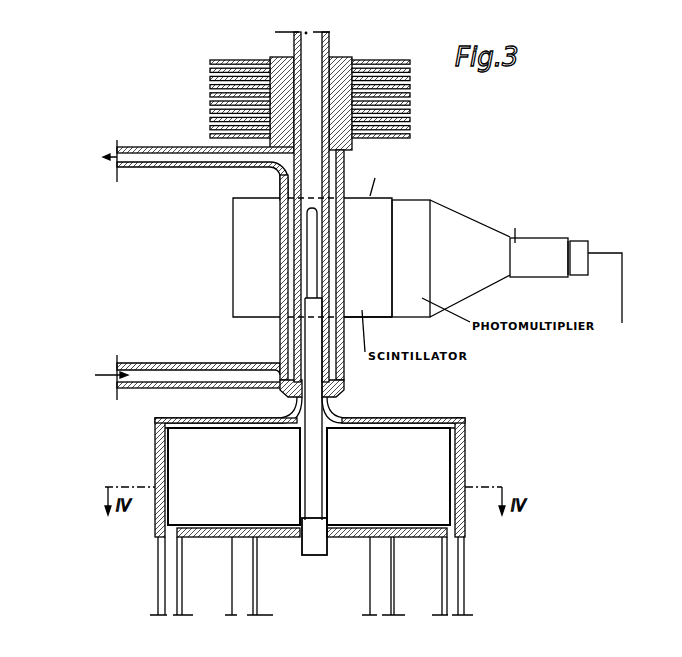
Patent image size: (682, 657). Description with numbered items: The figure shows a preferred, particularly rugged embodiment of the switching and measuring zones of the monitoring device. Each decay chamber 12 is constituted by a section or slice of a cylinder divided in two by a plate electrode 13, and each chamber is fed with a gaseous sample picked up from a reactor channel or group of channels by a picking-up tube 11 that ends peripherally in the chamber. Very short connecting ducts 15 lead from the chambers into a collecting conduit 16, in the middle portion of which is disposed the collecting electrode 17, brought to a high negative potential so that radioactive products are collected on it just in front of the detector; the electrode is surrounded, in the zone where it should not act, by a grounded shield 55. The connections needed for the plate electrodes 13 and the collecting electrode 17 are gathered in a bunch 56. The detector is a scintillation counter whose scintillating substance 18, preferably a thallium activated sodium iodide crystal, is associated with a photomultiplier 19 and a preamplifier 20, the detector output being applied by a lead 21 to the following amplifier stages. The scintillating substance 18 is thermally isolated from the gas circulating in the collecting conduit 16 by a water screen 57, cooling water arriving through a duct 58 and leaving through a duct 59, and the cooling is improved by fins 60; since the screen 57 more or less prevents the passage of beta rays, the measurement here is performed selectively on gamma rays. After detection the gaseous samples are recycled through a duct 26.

The picking-up tube 11 is at (453, 576).
The decay chamber 12 is at (309, 482).
The plate electrode 13 is at (452, 457).
The connecting duct 15 is at (335, 413).
The collecting conduit 16 is at (300, 258).
The collecting electrode 17 is at (312, 228).
The scintillating substance 18 is at (375, 312).
The photomultiplier 19 is at (410, 220).
The preamplifier 20 is at (555, 270).
The lead 21 is at (620, 307).
The duct 26 is at (315, 58).
The grounded shield 55 is at (310, 332).
The bunch 56 is at (313, 545).
The water screen 57 is at (292, 182).
The duct 58 is at (160, 375).
The duct 59 is at (157, 158).
The fins 60 is at (393, 60).